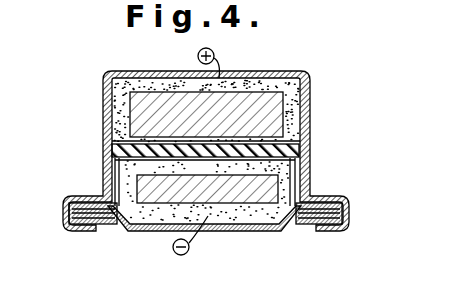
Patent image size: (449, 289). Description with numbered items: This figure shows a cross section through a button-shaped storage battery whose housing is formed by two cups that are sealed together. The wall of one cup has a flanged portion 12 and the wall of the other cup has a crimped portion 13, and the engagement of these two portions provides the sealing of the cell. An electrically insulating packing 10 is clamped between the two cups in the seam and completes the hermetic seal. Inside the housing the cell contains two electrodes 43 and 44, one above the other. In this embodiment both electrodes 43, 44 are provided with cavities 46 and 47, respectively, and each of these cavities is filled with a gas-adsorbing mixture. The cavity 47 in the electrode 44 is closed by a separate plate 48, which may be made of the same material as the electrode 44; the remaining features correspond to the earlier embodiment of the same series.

The electrically insulating packing 10 is at (298, 224).
The flanged portion 12 is at (317, 226).
The crimped portion 13 is at (333, 201).
The electrode 43 is at (167, 84).
The electrode 44 is at (160, 215).
The cavity 46 is at (248, 102).
The cavity 47 is at (246, 192).
The separate plate 48 is at (188, 150).